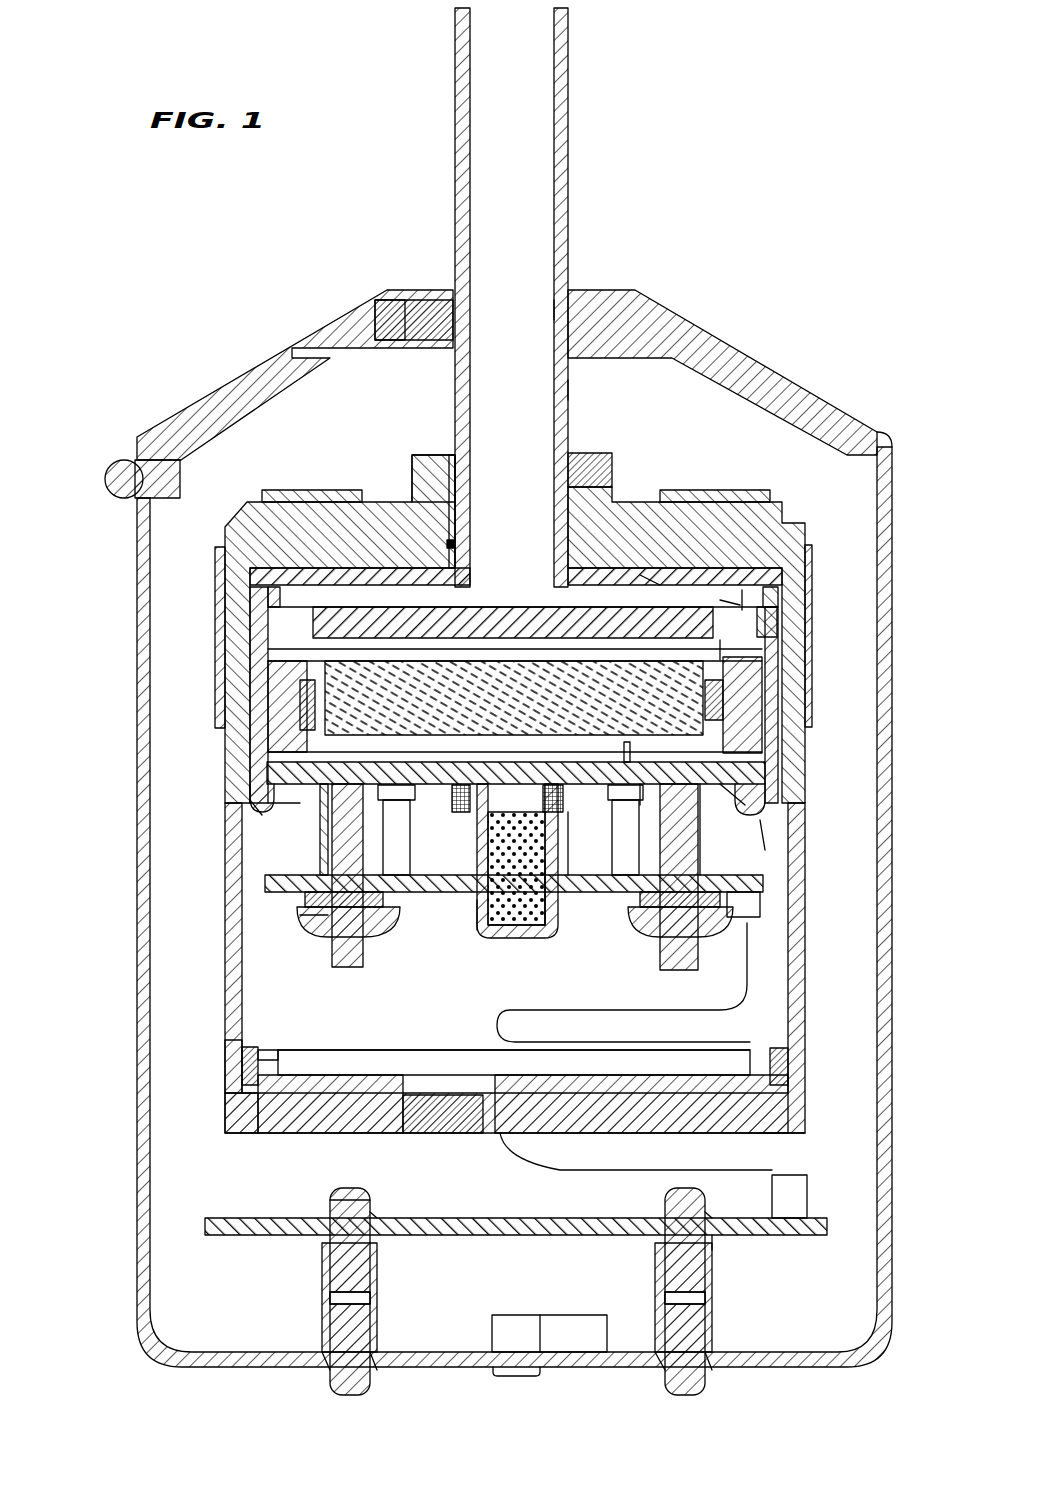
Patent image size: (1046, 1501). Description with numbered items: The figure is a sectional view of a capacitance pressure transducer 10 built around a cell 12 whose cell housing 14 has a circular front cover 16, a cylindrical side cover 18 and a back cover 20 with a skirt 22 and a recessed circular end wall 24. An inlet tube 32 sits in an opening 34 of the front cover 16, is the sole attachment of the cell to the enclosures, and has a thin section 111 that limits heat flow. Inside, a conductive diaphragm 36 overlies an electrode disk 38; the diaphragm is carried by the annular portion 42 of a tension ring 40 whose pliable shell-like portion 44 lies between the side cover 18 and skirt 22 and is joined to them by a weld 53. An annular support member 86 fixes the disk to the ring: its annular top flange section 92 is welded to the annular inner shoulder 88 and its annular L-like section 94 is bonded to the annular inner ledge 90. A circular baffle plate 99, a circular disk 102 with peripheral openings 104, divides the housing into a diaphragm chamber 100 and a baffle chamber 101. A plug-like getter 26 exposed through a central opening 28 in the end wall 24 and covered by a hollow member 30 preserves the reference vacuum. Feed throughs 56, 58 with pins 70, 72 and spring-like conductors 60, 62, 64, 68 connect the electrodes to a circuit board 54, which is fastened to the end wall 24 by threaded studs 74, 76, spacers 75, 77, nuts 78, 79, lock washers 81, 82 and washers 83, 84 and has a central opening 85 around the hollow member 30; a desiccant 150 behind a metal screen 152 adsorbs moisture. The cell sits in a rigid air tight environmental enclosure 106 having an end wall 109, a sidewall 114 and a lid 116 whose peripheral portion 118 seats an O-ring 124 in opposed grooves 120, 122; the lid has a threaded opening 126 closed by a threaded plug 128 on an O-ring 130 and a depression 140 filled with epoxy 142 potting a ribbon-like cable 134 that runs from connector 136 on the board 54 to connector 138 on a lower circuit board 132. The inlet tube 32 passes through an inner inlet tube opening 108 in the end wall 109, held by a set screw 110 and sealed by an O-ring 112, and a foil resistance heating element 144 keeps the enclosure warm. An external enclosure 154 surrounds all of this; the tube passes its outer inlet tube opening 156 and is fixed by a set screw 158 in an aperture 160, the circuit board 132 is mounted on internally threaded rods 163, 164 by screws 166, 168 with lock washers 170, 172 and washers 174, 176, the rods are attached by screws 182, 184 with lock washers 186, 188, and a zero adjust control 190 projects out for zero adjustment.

The capacitance pressure transducer 10 is at (740, 132).
The inlet tube 32 is at (578, 204).
The outer inlet tube opening 156 is at (556, 312).
The thin section 111 is at (570, 392).
The aperture 160 is at (440, 303).
The set screw 158 is at (400, 300).
The foil resistance heating element 144 is at (212, 568).
The air tight environmental enclosure 106 is at (383, 498).
The end wall 109 is at (438, 470).
The set screw 110 is at (612, 470).
The desiccant 150 is at (280, 491).
The metal screen 152 is at (320, 490).
The inner inlet tube opening 108 is at (470, 468).
The O-ring 112 is at (455, 543).
The opening 34 is at (462, 570).
The circular disk 102 is at (530, 600).
The peripheral openings 104 is at (316, 622).
The diaphragm 36 is at (328, 655).
The cylindrical side cover 18 is at (808, 596).
The baffle chamber 101 is at (742, 598).
The circular baffle plate 99 is at (640, 580).
The diaphragm chamber 100 is at (726, 600).
The circular front cover 16 is at (734, 640).
The tension ring 40 is at (720, 655).
The annular inner shoulder 88 is at (255, 650).
The annular portion 42 is at (305, 695).
The electrode disk 38 is at (300, 700).
The annular inner ledge 90 is at (325, 728).
The spring-like conductor 62 is at (290, 766).
The annular top flange section 92 is at (745, 672).
The annular support member 86 is at (725, 705).
The annular L-like section 94 is at (752, 735).
The central opening 28 is at (545, 755).
The spring-like conductor 68 is at (625, 750).
The spacer 77 is at (640, 805).
The threaded stud 76 is at (740, 795).
The pliable shell-like portion 44 is at (255, 800).
The weld 53 is at (250, 812).
The cell housing 14 is at (300, 797).
The spacer 75 is at (323, 820).
The sidewall 114 is at (805, 855).
The cell 12 is at (420, 832).
The spring-like conductor 60 is at (430, 890).
The circuit board 54 is at (412, 905).
The threaded stud 74 is at (345, 965).
The nut 78 is at (390, 935).
The washer 83 is at (312, 900).
The lock washer 81 is at (305, 915).
The pin 70 is at (405, 820).
The feed through 56 is at (398, 792).
The feed through 58 is at (612, 790).
The pin 72 is at (628, 820).
The spring-like conductor 64 is at (612, 858).
The hollow member 30 is at (500, 938).
The plug-like getter 26 is at (475, 935).
The central opening 85 is at (560, 912).
The recessed circular end wall 24 is at (740, 802).
The back cover 20 is at (712, 795).
The skirt 22 is at (762, 818).
The lock washer 82 is at (740, 935).
The washer 84 is at (740, 912).
The electrical plug-like connector 136 is at (760, 900).
The nut 79 is at (760, 990).
The threaded opening 126 is at (448, 1080).
The O-ring 130 is at (400, 1092).
The threaded plug 128 is at (440, 1133).
The depression 140 is at (290, 1052).
The groove 122 is at (255, 1047).
The groove 120 is at (226, 1070).
The O-ring 124 is at (788, 1060).
The peripheral portion 118 is at (262, 1133).
The epoxy 142 is at (770, 1140).
The ribbon-like cable 134 is at (600, 1153).
The electrical plug-like connector 138 is at (800, 1200).
The lid 116 is at (498, 1150).
The circuit board 132 is at (792, 1240).
The screw 166 is at (325, 1270).
The internally threaded rod 163 is at (325, 1305).
The lock washer 170 is at (372, 1212).
The washer 174 is at (375, 1215).
The screw 182 is at (328, 1370).
The lock washer 186 is at (374, 1370).
The screw 168 is at (660, 1268).
The internally threaded rod 164 is at (708, 1322).
The lock washer 172 is at (704, 1212).
The washer 176 is at (714, 1240).
The lock washer 188 is at (662, 1370).
The screw 184 is at (708, 1370).
The zero adjust control 190 is at (505, 1296).
The external enclosure 154 is at (133, 1250).